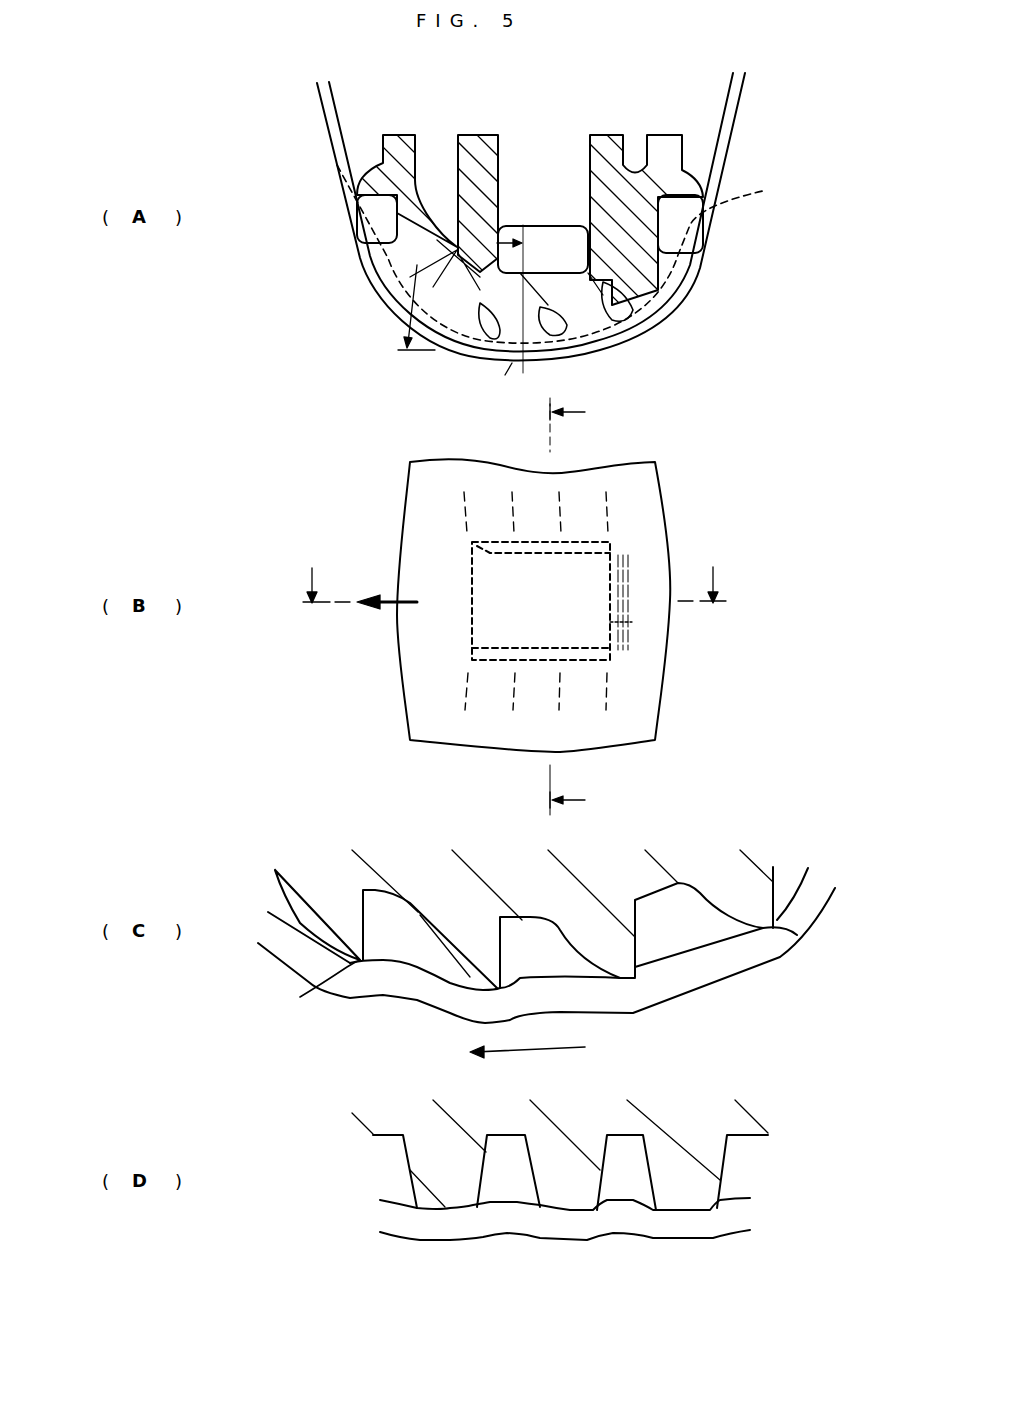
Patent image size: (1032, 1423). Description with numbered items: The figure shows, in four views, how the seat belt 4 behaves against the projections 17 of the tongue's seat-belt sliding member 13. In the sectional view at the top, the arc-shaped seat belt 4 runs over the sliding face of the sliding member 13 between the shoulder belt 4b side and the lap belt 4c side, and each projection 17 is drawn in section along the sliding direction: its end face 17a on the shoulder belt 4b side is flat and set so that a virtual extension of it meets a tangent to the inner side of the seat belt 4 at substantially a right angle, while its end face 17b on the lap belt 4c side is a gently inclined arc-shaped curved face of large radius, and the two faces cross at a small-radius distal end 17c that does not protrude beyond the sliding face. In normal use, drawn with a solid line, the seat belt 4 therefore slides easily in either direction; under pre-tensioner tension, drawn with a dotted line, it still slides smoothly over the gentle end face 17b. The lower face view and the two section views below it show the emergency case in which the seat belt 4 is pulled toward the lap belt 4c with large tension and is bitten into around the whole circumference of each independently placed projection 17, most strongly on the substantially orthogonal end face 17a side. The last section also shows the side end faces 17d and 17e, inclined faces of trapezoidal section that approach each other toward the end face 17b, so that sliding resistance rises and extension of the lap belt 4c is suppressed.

The seat belt 4 is at (737, 142).
The shoulder belt 4b is at (733, 110).
The lap belt 4c is at (322, 120).
The seat-belt sliding member 13 is at (507, 158).
The projection 17 is at (592, 178).
The end face 17a is at (453, 247).
The end face 17b is at (357, 240).
The distal end 17c is at (300, 997).
The side end face 17d is at (402, 1150).
The side end face 17e is at (725, 1150).